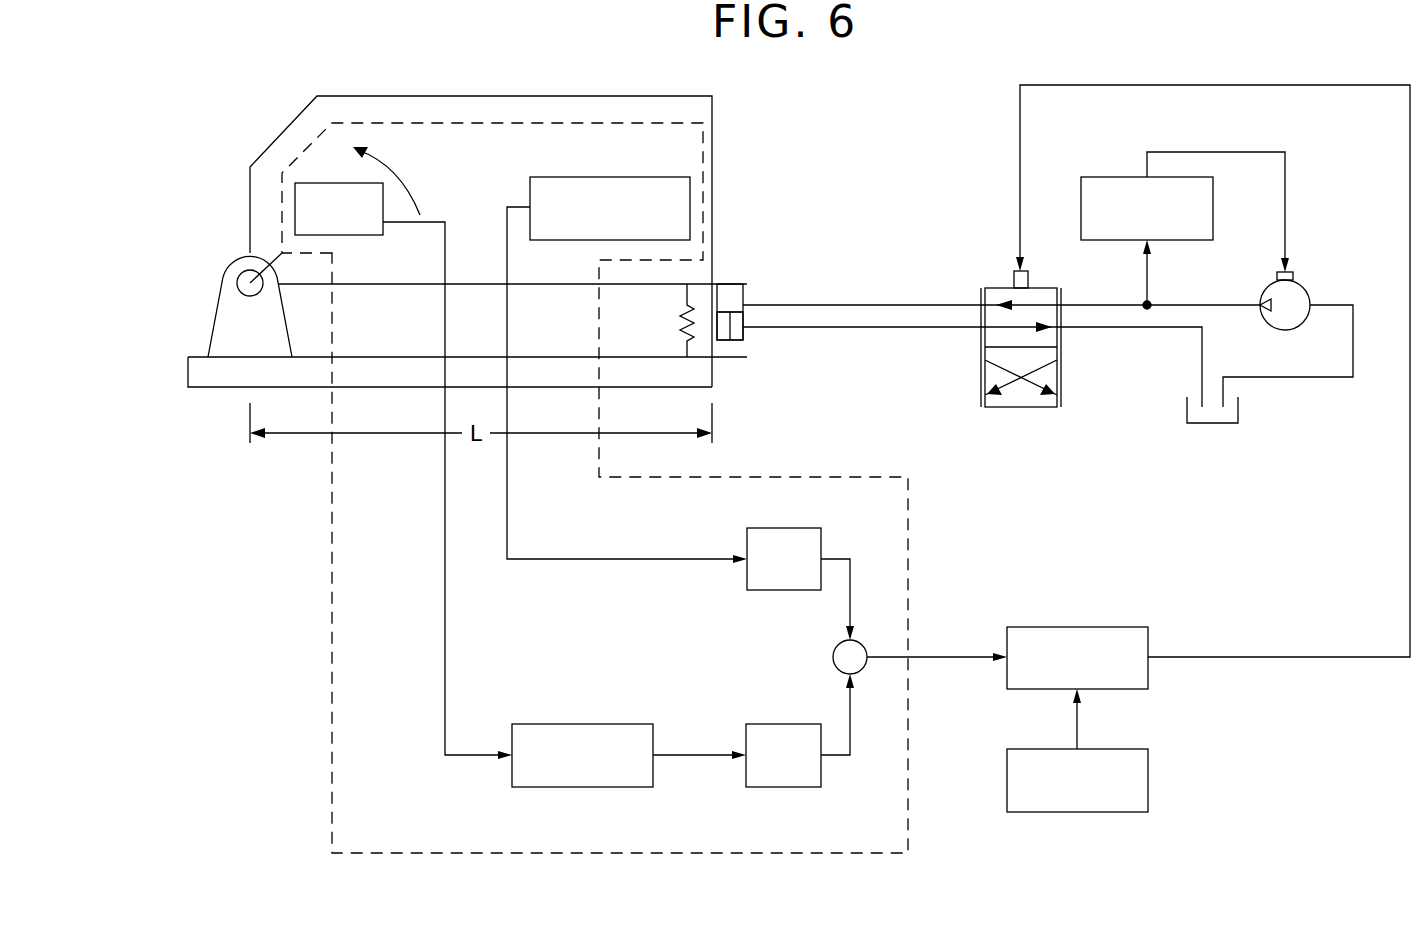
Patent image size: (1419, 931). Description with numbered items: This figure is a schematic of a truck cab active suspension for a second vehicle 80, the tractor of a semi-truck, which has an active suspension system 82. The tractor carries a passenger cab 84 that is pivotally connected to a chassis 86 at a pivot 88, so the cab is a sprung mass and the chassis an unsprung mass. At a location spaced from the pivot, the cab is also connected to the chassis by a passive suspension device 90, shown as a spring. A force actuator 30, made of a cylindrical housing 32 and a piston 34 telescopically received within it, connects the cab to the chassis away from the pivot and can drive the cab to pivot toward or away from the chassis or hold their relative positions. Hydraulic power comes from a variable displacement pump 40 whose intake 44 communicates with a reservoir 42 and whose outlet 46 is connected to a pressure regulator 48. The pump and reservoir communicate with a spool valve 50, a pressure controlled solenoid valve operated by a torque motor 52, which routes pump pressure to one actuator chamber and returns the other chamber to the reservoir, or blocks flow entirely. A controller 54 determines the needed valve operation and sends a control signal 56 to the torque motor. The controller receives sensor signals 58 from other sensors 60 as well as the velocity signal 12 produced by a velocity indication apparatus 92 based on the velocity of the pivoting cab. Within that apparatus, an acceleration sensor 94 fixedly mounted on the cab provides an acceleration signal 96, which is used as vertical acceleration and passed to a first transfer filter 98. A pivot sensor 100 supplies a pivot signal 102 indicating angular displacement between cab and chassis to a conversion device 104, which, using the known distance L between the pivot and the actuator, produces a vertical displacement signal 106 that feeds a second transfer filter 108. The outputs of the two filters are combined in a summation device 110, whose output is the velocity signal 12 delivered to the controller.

The velocity signal 12 is at (945, 657).
The force actuator 30 is at (815, 292).
The cylindrical housing 32 is at (745, 290).
The piston 34 is at (748, 335).
The variable displacement pump 40 is at (1295, 292).
The reservoir 42 is at (1187, 413).
The intake 44 is at (1330, 305).
The outlet 46 is at (1260, 300).
The pressure regulator 48 is at (1105, 178).
The spool valve 50 is at (1018, 402).
The torque motor 52 is at (1014, 281).
The controller 54 is at (1117, 633).
The control signal 56 is at (1245, 657).
The sensor signals 58 is at (1078, 732).
The other sensors 60 is at (1143, 779).
The second vehicle 80 is at (252, 70).
The active suspension system 82 is at (890, 222).
The passenger cab 84 is at (545, 108).
The chassis 86 is at (227, 378).
The pivot 88 is at (240, 278).
The passive suspension device 90 is at (683, 311).
The velocity indication apparatus 92 is at (322, 648).
The acceleration sensor 94 is at (565, 177).
The acceleration signal 96 is at (507, 476).
The first transfer filter 98 is at (750, 537).
The pivot sensor 100 is at (352, 236).
The pivot signal 102 is at (445, 503).
The conversion device 104 is at (628, 787).
The vertical displacement signal 106 is at (670, 757).
The second transfer filter 108 is at (752, 735).
The summation device 110 is at (834, 652).